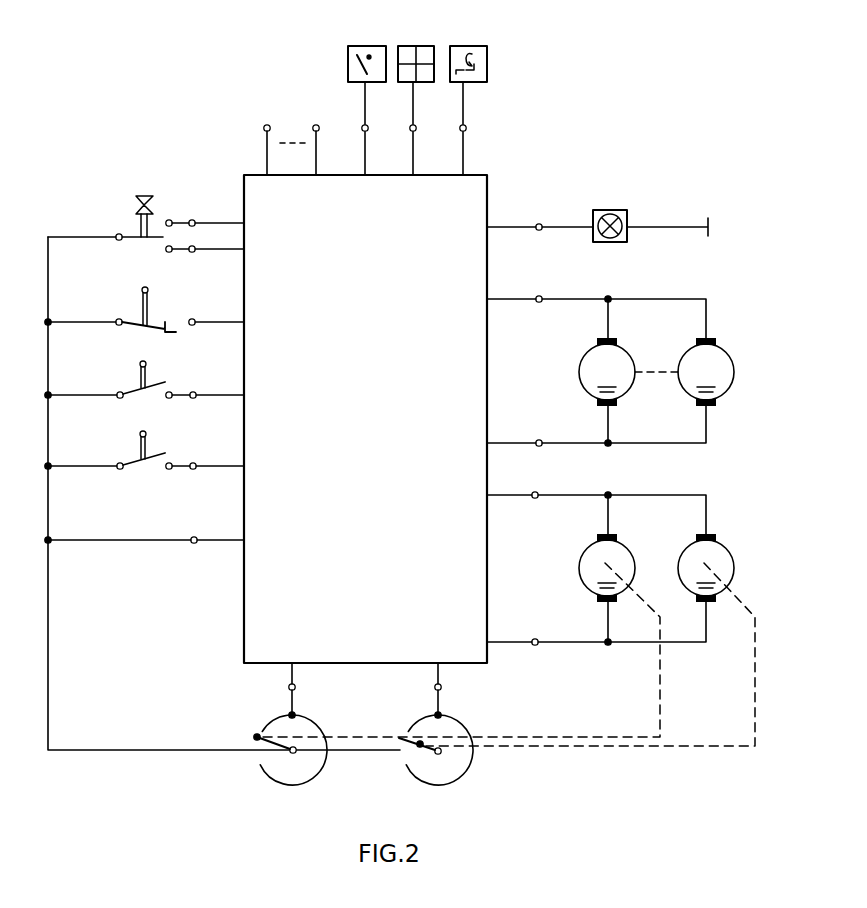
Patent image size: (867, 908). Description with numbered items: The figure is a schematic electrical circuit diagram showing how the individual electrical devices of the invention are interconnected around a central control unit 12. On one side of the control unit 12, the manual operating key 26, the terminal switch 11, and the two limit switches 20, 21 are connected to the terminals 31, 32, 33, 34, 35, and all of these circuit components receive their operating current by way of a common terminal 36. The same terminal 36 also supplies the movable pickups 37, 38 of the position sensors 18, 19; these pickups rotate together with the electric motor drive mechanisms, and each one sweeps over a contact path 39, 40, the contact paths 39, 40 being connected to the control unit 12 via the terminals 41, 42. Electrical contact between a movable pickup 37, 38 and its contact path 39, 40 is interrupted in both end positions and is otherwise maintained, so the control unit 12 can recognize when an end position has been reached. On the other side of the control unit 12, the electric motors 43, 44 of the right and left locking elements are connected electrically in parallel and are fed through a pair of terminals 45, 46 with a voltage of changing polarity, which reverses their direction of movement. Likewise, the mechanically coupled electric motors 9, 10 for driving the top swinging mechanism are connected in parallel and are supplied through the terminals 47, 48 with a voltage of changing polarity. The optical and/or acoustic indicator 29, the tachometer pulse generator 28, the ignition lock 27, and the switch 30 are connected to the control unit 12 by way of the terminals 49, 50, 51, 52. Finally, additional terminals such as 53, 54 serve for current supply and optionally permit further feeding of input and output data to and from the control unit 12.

The electric motor 9 is at (633, 348).
The electric motor 10 is at (732, 345).
The terminal switch 11 is at (162, 299).
The control unit 12 is at (488, 178).
The position sensor 18 is at (320, 705).
The position sensor 19 is at (470, 710).
The limit switch 20 is at (166, 373).
The limit switch 21 is at (166, 444).
The manual operating key 26 is at (163, 205).
The ignition lock 27 is at (412, 46).
The tachometer pulse generator 28 is at (469, 46).
The optical and/or acoustic indicator 29 is at (613, 210).
The switch 30 is at (373, 46).
The terminal 31 is at (194, 220).
The terminal 32 is at (194, 246).
The terminal 33 is at (194, 319).
The terminal 34 is at (203, 380).
The terminal 35 is at (203, 451).
The terminal 36 is at (194, 537).
The movable pickup 37 is at (263, 746).
The movable pickup 38 is at (400, 746).
The contact path 39 is at (322, 730).
The contact path 40 is at (476, 728).
The terminal 41 is at (288, 687).
The terminal 42 is at (434, 687).
The electric motor 43 is at (636, 557).
The electric motor 44 is at (737, 555).
The terminal 45 is at (536, 639).
The terminal 46 is at (537, 492).
The terminal 47 is at (540, 440).
The terminal 48 is at (540, 296).
The terminal 49 is at (540, 224).
The terminal 50 is at (466, 128).
The terminal 51 is at (416, 126).
The terminal 52 is at (368, 126).
The additional terminal 53 is at (324, 118).
The additional terminal 54 is at (275, 118).